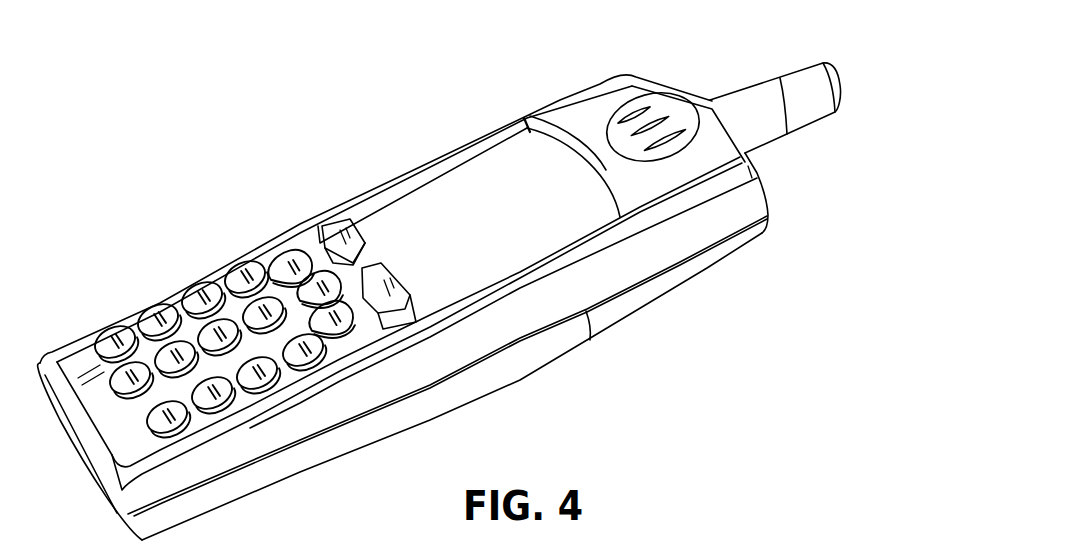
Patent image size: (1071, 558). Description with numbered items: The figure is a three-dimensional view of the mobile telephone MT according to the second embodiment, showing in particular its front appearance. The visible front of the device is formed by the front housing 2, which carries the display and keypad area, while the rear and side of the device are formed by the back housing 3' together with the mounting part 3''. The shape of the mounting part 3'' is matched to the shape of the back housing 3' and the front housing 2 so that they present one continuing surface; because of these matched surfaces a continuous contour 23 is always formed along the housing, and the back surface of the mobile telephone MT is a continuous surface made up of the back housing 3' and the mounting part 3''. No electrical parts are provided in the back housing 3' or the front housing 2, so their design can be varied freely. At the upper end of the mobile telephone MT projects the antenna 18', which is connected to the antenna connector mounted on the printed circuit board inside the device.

The mobile telephone MT is at (112, 236).
The front housing 2 is at (403, 207).
The antenna 18' is at (775, 88).
The back housing 3' is at (535, 385).
The mounting part 3'' is at (503, 303).
The continuous contour 23 is at (362, 418).